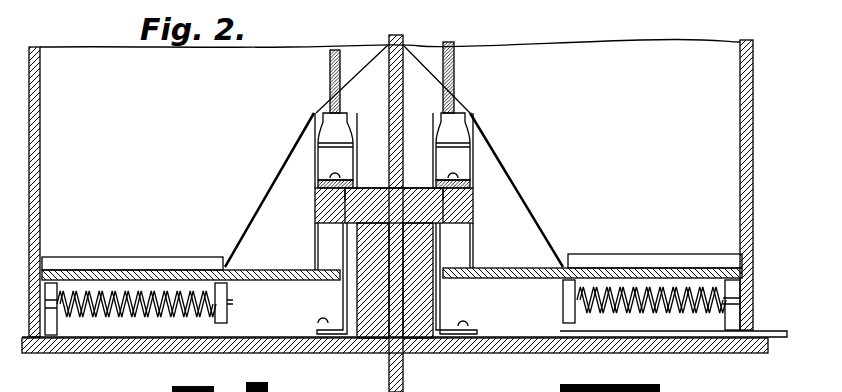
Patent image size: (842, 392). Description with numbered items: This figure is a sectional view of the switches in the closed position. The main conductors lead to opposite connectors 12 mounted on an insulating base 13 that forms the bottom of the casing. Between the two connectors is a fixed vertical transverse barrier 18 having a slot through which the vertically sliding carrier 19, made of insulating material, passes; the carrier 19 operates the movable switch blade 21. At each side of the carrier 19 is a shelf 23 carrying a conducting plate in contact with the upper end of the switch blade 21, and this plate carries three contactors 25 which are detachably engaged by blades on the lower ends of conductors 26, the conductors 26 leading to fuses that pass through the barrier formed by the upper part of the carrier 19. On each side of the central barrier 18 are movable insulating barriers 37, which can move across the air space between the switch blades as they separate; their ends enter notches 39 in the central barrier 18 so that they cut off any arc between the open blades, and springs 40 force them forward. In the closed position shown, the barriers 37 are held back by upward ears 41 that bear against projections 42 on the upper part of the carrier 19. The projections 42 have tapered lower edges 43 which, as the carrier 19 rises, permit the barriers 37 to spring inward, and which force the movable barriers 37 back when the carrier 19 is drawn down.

The connectors 12 is at (511, 333).
The insulating base 13 is at (482, 353).
The fixed vertical transverse barrier 18 is at (422, 303).
The carrier 19 is at (403, 102).
The movable switch blade 21 is at (445, 235).
The shelf 23 is at (474, 214).
The contactors 25 is at (455, 158).
The conductors 26 is at (330, 70).
The movable insulating barriers 37 is at (266, 291).
The notches 39 is at (440, 265).
The springs 40 is at (628, 280).
The upward ears 41 is at (505, 177).
The projections 42 is at (473, 112).
The tapered lower edges 43 is at (445, 210).